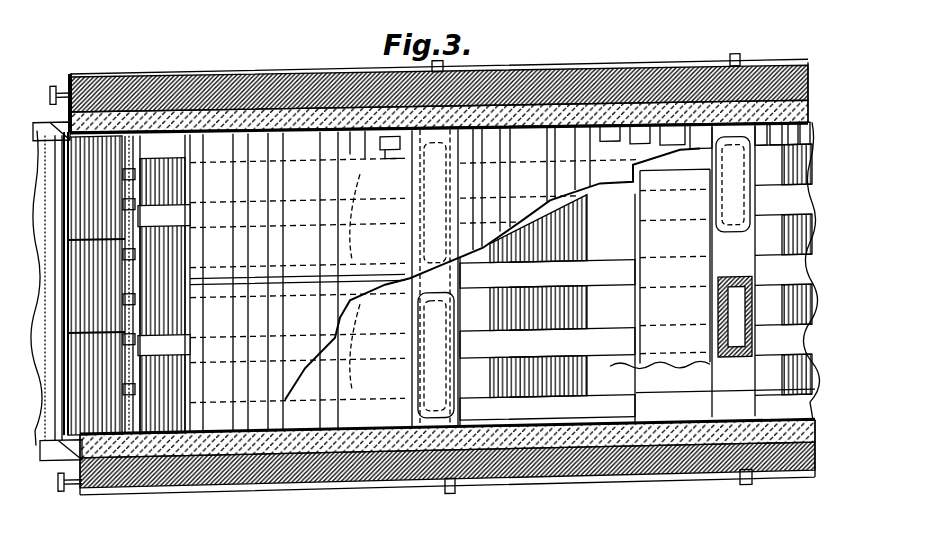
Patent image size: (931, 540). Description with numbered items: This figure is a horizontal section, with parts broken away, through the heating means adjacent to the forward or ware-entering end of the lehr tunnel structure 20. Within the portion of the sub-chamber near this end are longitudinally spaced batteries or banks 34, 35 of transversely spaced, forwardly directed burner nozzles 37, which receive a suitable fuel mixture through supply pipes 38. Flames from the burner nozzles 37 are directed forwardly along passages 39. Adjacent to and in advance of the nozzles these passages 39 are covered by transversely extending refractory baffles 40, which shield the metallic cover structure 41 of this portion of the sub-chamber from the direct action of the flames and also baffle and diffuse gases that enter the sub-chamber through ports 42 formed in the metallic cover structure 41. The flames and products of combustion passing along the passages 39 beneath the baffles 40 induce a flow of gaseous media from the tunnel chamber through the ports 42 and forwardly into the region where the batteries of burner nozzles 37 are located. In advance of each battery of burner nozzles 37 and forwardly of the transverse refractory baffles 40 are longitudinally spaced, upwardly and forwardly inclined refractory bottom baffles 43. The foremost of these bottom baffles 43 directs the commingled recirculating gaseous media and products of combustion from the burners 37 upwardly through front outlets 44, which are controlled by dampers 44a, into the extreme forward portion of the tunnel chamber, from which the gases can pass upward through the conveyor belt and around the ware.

The lehr tunnel structure 20 is at (333, 78).
The battery of burner nozzles 34 is at (428, 272).
The battery of burner nozzles 35 is at (723, 253).
The burner nozzle 37 is at (413, 213).
The supply pipe 38 is at (445, 72).
The passage 39 is at (352, 215).
The refractory baffle 40 is at (362, 165).
The metallic cover structure 41 is at (262, 116).
The port 42 is at (398, 138).
The bottom baffle 43 is at (165, 213).
The front outlet 44 is at (117, 412).
The damper 44a is at (160, 130).